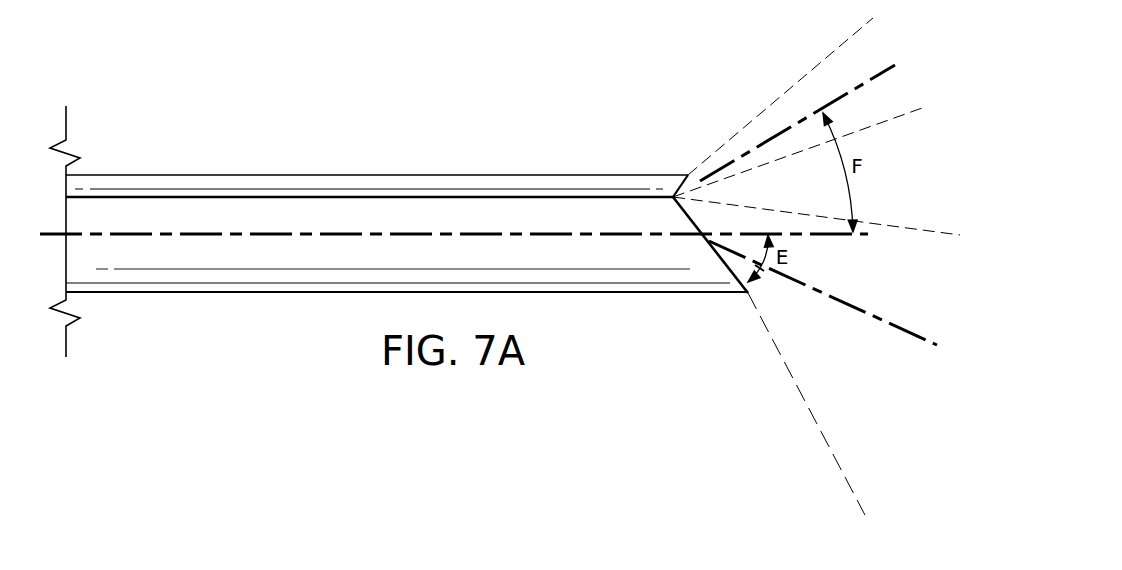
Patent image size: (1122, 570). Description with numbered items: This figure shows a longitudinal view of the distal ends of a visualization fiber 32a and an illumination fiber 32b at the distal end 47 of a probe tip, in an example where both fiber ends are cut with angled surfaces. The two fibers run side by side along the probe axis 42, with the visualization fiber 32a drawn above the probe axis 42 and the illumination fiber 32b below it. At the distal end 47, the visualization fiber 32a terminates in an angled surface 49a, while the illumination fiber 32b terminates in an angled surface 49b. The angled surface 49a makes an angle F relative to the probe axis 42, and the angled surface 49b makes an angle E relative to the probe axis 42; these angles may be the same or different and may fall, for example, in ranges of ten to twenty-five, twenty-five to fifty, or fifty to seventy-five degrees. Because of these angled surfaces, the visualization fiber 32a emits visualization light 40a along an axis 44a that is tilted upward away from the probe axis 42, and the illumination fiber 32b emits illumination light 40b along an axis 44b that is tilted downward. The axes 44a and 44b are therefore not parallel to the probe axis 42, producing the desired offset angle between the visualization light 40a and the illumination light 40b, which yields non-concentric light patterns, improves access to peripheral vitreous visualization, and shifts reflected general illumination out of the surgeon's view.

The visualization fiber 32a is at (421, 175).
The illumination fiber 32b is at (277, 293).
The probe axis 42 is at (193, 233).
The distal end 47 is at (664, 163).
The angled surface 49a is at (689, 178).
The angled surface 49b is at (700, 223).
The axis 44a is at (826, 107).
The axis 44b is at (922, 335).
The visualization light 40a is at (877, 55).
The illumination light 40b is at (831, 376).